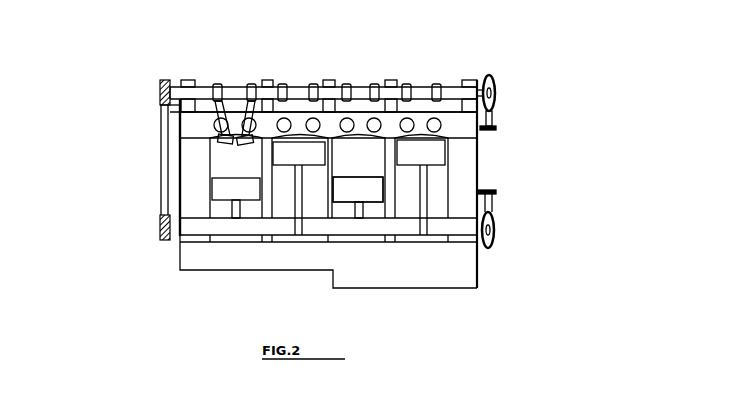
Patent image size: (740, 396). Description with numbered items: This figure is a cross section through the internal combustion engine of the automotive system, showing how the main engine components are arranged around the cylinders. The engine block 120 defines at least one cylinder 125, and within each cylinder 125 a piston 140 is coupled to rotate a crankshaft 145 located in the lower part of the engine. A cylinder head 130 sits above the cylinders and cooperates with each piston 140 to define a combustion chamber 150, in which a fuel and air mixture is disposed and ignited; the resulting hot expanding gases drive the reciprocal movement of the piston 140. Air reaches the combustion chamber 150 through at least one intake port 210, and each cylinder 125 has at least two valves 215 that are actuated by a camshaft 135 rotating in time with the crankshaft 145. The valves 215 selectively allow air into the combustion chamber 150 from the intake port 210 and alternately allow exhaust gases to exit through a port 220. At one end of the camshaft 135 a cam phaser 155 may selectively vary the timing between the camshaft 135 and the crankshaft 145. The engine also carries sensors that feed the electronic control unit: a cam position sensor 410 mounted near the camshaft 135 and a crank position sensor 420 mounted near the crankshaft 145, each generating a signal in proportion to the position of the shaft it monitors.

The engine block 120 is at (178, 177).
The cylinder 125 is at (333, 162).
The cylinder head 130 is at (178, 133).
The camshaft 135 is at (233, 85).
The piston 140 is at (362, 188).
The crankshaft 145 is at (205, 230).
The combustion chamber 150 is at (433, 143).
The cam phaser 155 is at (162, 92).
The intake port 210 is at (352, 112).
The valves 215 is at (222, 140).
The exhaust port 220 is at (303, 115).
The cam position sensor 410 is at (495, 130).
The crank position sensor 420 is at (495, 193).